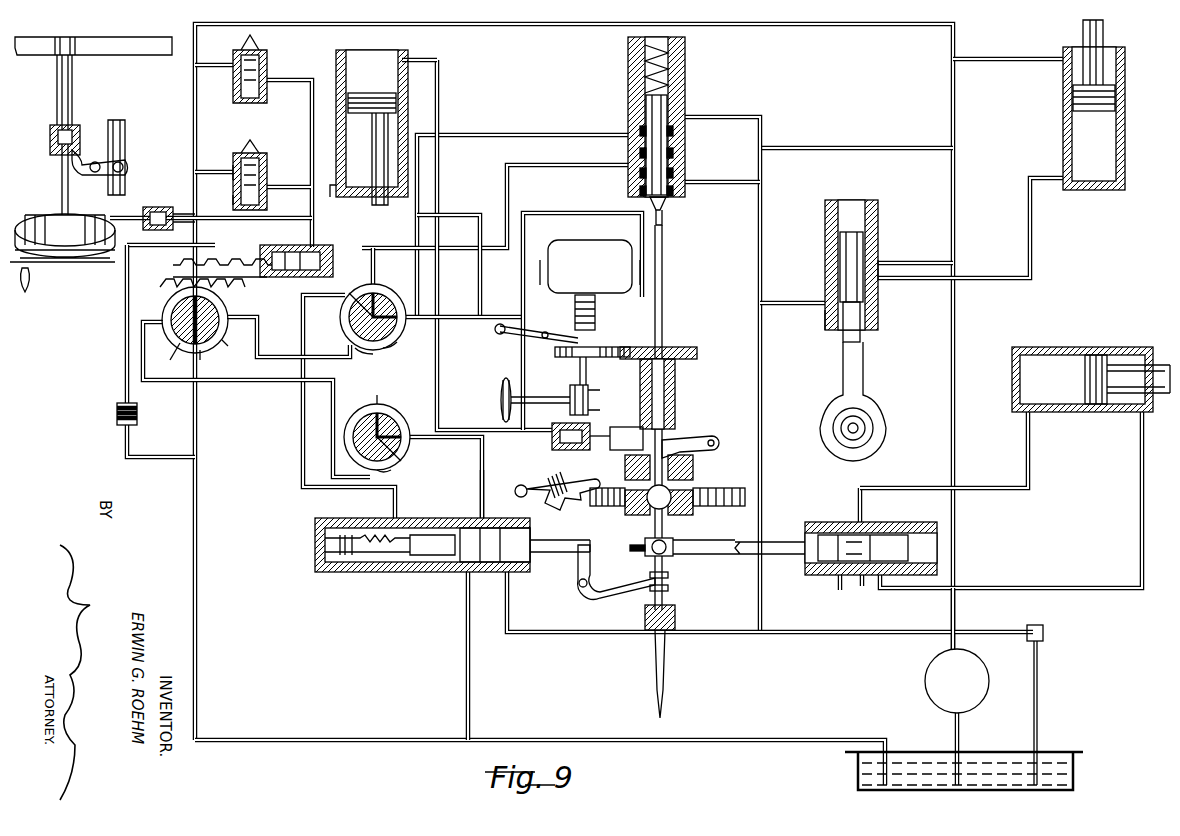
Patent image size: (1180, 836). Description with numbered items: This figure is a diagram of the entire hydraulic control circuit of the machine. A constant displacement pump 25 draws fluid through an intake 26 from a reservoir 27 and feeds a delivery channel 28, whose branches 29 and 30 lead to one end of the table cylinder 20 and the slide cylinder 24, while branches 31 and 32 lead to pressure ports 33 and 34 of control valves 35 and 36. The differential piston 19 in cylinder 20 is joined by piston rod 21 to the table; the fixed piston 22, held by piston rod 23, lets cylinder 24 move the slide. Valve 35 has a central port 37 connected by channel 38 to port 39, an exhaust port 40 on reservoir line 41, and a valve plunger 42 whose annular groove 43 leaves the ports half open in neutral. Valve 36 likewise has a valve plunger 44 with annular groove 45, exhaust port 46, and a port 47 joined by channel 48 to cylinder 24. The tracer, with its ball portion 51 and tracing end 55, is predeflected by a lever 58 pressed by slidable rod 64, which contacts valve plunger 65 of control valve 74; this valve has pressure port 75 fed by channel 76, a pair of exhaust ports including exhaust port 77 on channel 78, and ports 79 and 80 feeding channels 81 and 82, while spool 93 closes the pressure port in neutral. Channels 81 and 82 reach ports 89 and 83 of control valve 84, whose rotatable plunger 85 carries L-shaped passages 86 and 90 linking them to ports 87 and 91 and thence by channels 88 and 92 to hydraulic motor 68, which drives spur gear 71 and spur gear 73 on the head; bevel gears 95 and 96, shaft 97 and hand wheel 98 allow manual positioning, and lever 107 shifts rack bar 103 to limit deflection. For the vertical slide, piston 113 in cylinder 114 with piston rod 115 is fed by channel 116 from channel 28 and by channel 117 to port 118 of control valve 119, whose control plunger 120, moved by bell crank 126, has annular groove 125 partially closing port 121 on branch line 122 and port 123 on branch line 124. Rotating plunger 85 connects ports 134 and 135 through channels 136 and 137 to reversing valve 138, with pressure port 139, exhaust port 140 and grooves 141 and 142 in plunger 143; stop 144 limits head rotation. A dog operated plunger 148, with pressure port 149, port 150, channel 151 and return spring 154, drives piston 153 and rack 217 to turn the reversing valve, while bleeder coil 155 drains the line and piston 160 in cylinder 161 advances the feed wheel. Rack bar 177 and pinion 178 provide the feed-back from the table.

The piston 19 is at (1100, 347).
The cylinder 20 is at (1138, 347).
The piston rod 21 is at (1128, 395).
The piston 22 is at (1118, 100).
The piston rod 23 is at (1105, 30).
The cylinder 24 is at (1128, 153).
The constant displacement pump 25 is at (925, 671).
The intake 26 is at (953, 730).
The reservoir 27 is at (1050, 748).
The delivery channel 28 is at (968, 612).
The branch 29 is at (1140, 496).
The branch 30 is at (1022, 66).
The branch 31 is at (908, 594).
The branch 32 is at (923, 260).
The pressure port 33 is at (870, 595).
The pressure port 34 is at (878, 240).
The control valve 35 is at (814, 514).
The control valve 36 is at (830, 318).
The central port 37 is at (856, 490).
The channel 38 is at (924, 484).
The port 39 is at (1034, 418).
The exhaust port 40 is at (840, 594).
The reservoir line 41 is at (758, 603).
The valve plunger 42 is at (799, 508).
The annular groove 43 is at (866, 538).
The valve plunger 44 is at (843, 330).
The annular groove 45 is at (840, 288).
The exhaust port 46 is at (880, 330).
The port 47 is at (880, 290).
The channel 48 is at (1010, 268).
The ball portion 51 is at (672, 556).
The tracing end 55 is at (663, 705).
The lever 58 is at (692, 410).
The slidable rod 64 is at (664, 296).
The valve plunger 65 is at (664, 218).
The hydraulic motor 68 is at (565, 252).
The spur gear 71 is at (560, 353).
The spur gear 73 is at (692, 343).
The control valve 74 is at (630, 75).
The pressure port 75 is at (690, 145).
The channel 76 is at (830, 156).
The exhaust port 77 is at (690, 108).
The channel 78 is at (758, 243).
The port 79 is at (638, 186).
The port 80 is at (632, 134).
The channel 81 is at (568, 170).
The channel 82 is at (518, 130).
The port 83 is at (372, 394).
The control valve 84 is at (296, 424).
The rotatable plunger 85 is at (400, 408).
The L-shaped passage 86 is at (393, 466).
The port 87 is at (405, 425).
The channel 88 is at (446, 477).
The port 89 is at (368, 280).
The L-shaped passage 90 is at (390, 290).
The port 91 is at (378, 300).
The channel 92 is at (521, 273).
The spool 93 is at (635, 153).
The bevel gear 95 is at (600, 392).
The bevel gear 96 is at (590, 410).
The shaft 97 is at (546, 396).
The hand wheel 98 is at (510, 375).
The rack bar 103 is at (741, 482).
The lever 107 is at (526, 474).
The piston 113 is at (345, 111).
The cylinder 114 is at (405, 49).
The piston rod 115 is at (368, 212).
The channel 116 is at (324, 190).
The channel 117 is at (440, 80).
The port 118 is at (487, 520).
The control valve 119 is at (334, 572).
The control plunger 120 is at (545, 527).
The port 121 is at (456, 564).
The branch line 122 is at (800, 638).
The port 123 is at (444, 572).
The branch line 124 is at (470, 683).
The annular groove 125 is at (482, 515).
The bell crank 126 is at (605, 598).
The port 134 is at (376, 368).
The port 135 is at (390, 487).
The channel 136 is at (290, 353).
The channel 137 is at (240, 385).
The reversing valve 138 is at (165, 330).
The pressure port 139 is at (168, 278).
The exhaust port 140 is at (210, 356).
The groove 141 is at (162, 300).
The groove 142 is at (235, 339).
The plunger 143 is at (162, 358).
The hydraulically actuated stop 144 is at (597, 436).
The dog operated plunger 148 is at (268, 140).
The pressure port 149 is at (234, 163).
The port 150 is at (268, 200).
The channel 151 is at (300, 188).
The piston 153 is at (300, 246).
The spring 154 is at (235, 200).
The bleeder coil 155 is at (140, 414).
The piston 160 is at (160, 194).
The cylinder 161 is at (176, 204).
The rack bar 177 is at (132, 48).
The pinion 178 is at (78, 52).
The rack 217 is at (222, 262).